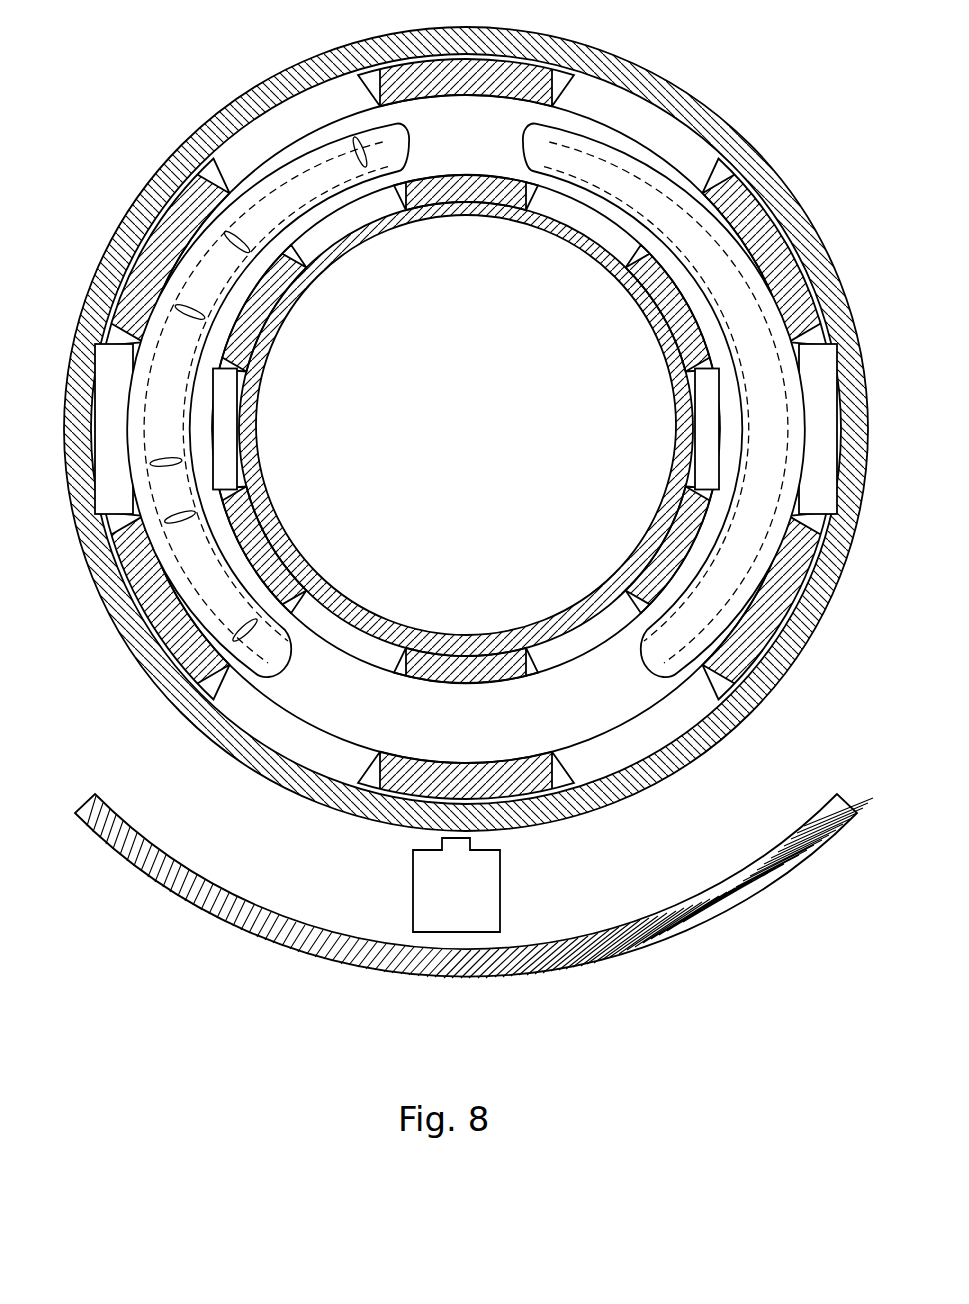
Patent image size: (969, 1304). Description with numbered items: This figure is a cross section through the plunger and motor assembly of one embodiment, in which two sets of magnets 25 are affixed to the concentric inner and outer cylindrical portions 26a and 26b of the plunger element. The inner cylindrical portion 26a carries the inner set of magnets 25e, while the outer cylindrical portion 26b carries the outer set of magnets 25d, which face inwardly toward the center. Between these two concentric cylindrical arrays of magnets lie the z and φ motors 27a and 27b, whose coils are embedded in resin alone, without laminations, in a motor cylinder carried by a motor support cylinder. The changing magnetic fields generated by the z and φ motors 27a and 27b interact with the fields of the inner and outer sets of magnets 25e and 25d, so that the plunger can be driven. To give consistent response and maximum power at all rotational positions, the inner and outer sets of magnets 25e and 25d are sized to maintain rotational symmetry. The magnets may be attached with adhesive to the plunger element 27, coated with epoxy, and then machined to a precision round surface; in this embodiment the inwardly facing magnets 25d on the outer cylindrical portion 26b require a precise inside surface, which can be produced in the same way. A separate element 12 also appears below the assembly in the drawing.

The terminal box 12 is at (461, 872).
The magnets 25 is at (118, 377).
The outer set of magnets 25d is at (308, 143).
The inner set of magnets 25e is at (484, 200).
The inner cylindrical portion 26a is at (272, 497).
The outer cylindrical portion 26b is at (740, 128).
The plunger element 27 is at (152, 889).
The z motor 27a is at (772, 365).
The φ motor 27b is at (338, 185).